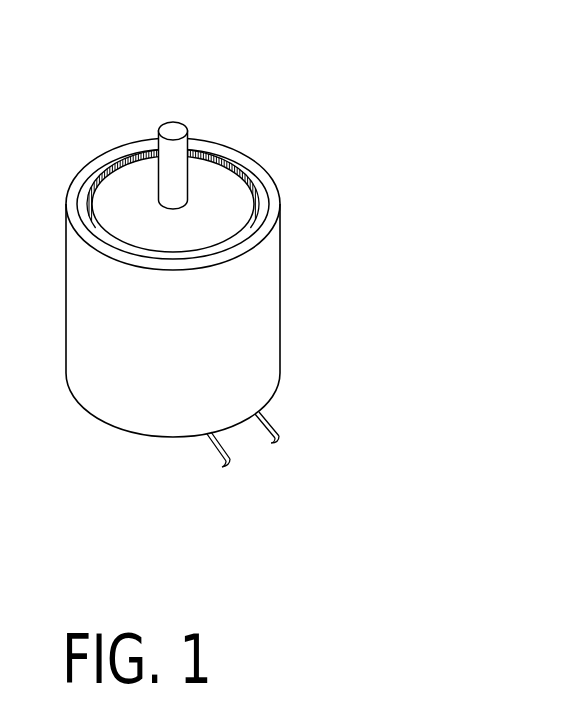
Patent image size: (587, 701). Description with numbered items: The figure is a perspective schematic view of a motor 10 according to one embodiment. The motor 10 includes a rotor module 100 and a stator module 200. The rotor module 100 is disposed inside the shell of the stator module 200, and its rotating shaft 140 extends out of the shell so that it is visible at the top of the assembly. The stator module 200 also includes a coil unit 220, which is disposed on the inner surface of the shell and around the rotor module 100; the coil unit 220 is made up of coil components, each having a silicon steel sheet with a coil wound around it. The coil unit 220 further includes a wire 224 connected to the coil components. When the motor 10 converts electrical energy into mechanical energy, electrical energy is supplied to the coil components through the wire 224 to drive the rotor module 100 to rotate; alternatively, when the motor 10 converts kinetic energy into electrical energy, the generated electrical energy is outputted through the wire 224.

The motor 10 is at (267, 277).
The rotor module 100 is at (218, 192).
The rotating shaft 140 is at (172, 122).
The stator module 200 is at (279, 188).
The coil unit 220 is at (104, 176).
The wire 224 is at (218, 455).